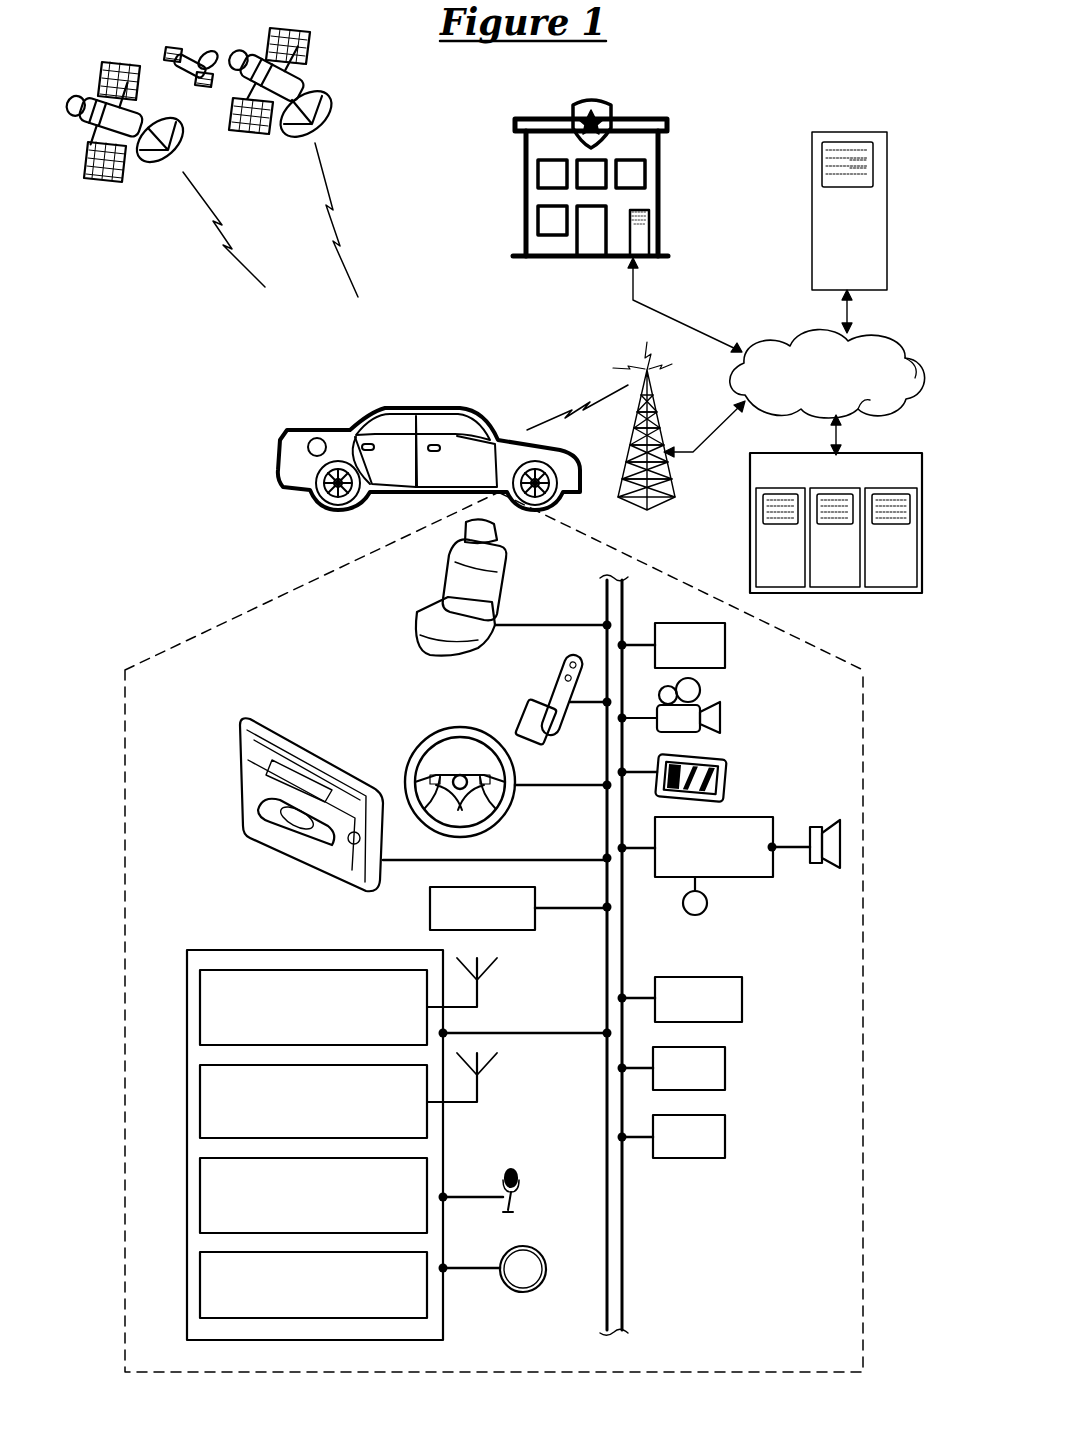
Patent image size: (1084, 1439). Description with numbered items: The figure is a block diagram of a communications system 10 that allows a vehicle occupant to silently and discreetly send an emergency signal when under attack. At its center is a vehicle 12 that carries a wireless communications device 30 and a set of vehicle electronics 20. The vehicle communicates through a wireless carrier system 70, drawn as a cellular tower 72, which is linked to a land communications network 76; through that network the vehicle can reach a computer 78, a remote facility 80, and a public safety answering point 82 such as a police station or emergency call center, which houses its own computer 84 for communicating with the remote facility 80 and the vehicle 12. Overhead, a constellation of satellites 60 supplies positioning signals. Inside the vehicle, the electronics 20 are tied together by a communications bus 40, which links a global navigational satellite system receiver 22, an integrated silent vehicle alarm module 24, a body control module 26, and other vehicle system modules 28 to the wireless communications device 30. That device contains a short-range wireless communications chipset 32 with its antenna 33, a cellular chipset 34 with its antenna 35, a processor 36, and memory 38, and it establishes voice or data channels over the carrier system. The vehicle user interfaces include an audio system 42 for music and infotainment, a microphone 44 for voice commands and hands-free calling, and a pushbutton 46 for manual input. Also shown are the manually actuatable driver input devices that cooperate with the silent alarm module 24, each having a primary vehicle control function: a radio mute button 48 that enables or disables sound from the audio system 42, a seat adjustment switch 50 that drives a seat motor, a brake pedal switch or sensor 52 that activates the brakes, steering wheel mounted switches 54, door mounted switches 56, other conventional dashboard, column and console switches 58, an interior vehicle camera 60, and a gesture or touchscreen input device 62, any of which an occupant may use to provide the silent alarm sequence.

The communications system 10 is at (168, 380).
The vehicle 12 is at (370, 412).
The vehicle electronics 20 is at (877, 1067).
The global navigational satellite system (GNSS) receiver 22 is at (743, 1000).
The integrated silent vehicle alarm (SVA) module 24 is at (727, 650).
The body control module (BCM) 26 is at (725, 1067).
The vehicle system modules (VSMs) 28 is at (725, 1133).
The wireless communications device 30 is at (245, 950).
The short-range wireless communications (SRWC) chipset 32 is at (313, 1007).
The antenna 33 is at (477, 990).
The cellular chipset 34 is at (313, 1101).
The antenna 35 is at (477, 1085).
The processor 36 is at (313, 1195).
The memory 38 is at (313, 1285).
The communications bus 40 is at (627, 1307).
The audio system 42 is at (762, 878).
The microphone 44 is at (520, 1193).
The pushbutton 46 is at (546, 1262).
The radio mute button 48 is at (707, 908).
The seat adjustment switch 50 is at (473, 640).
The brake pedal switch/sensor 52 is at (563, 667).
The steering wheel mounted switches 54 is at (428, 760).
The door mounted switches 56 is at (302, 795).
The other conventional switches 58 is at (427, 905).
The constellation of satellites / interior vehicle camera 60 is at (358, 138).
The gesture/touchscreen input device 62 is at (727, 762).
The wireless carrier system 70 is at (596, 367).
The cellular tower 72 is at (653, 399).
The land communications network 76 is at (776, 357).
The computer 78 is at (887, 236).
The remote facility 80 is at (836, 523).
The public safety answering point (PSAP) 82 is at (653, 118).
The computer 84 is at (648, 208).